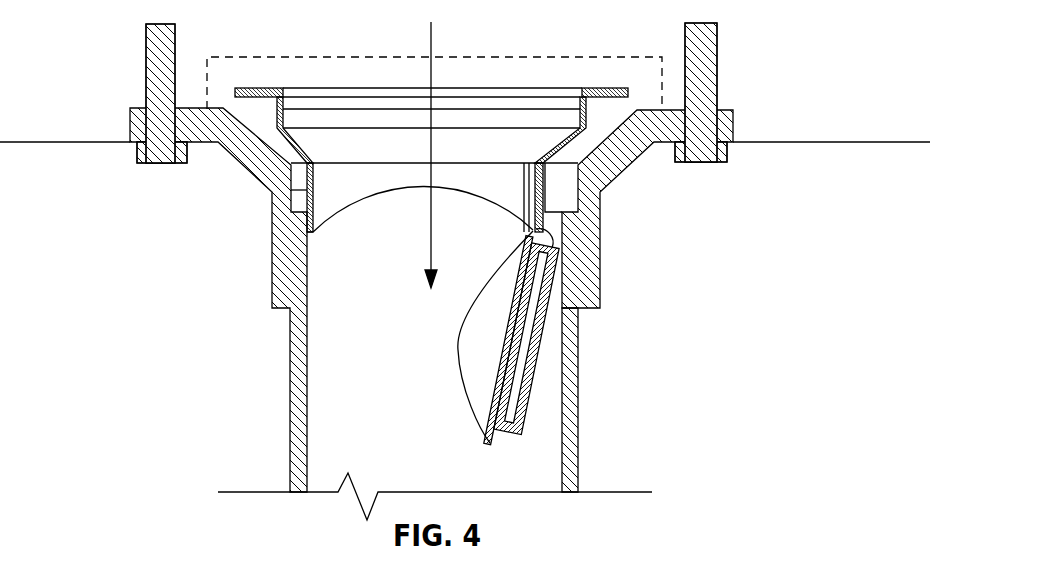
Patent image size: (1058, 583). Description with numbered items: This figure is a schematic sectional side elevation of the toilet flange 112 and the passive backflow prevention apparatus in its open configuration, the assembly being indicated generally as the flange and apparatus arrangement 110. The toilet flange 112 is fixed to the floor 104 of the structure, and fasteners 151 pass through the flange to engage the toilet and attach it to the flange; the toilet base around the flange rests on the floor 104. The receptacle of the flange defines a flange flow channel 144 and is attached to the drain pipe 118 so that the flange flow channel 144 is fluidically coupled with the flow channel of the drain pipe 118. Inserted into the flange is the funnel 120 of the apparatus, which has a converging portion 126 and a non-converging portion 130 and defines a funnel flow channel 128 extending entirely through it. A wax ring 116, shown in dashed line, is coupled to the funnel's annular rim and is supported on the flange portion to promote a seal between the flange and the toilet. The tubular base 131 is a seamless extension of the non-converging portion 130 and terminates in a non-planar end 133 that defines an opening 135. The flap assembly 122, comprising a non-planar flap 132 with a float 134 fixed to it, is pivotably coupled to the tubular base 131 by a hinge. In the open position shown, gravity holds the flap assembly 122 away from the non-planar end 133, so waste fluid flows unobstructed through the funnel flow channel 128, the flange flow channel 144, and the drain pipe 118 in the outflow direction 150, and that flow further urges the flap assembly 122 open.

The floor 104 is at (833, 142).
The valve assembly 110 is at (436, 260).
The toilet flange 112 is at (203, 150).
The wax ring 116 is at (249, 57).
The drain pipe 118 is at (580, 400).
The funnel 120 is at (276, 152).
The flap assembly 122 is at (447, 346).
The converging portion 126 is at (610, 157).
The funnel flow channel 128 is at (377, 193).
The non-converging portion 130 is at (292, 190).
The tubular base 131 is at (314, 242).
The non-planar flap 132 is at (484, 419).
The non-planar end 133 is at (505, 216).
The float 134 is at (546, 337).
The opening 135 is at (352, 224).
The flange flow channel 144 is at (397, 413).
The outflow direction 150 is at (433, 44).
The fasteners 151 is at (145, 153).